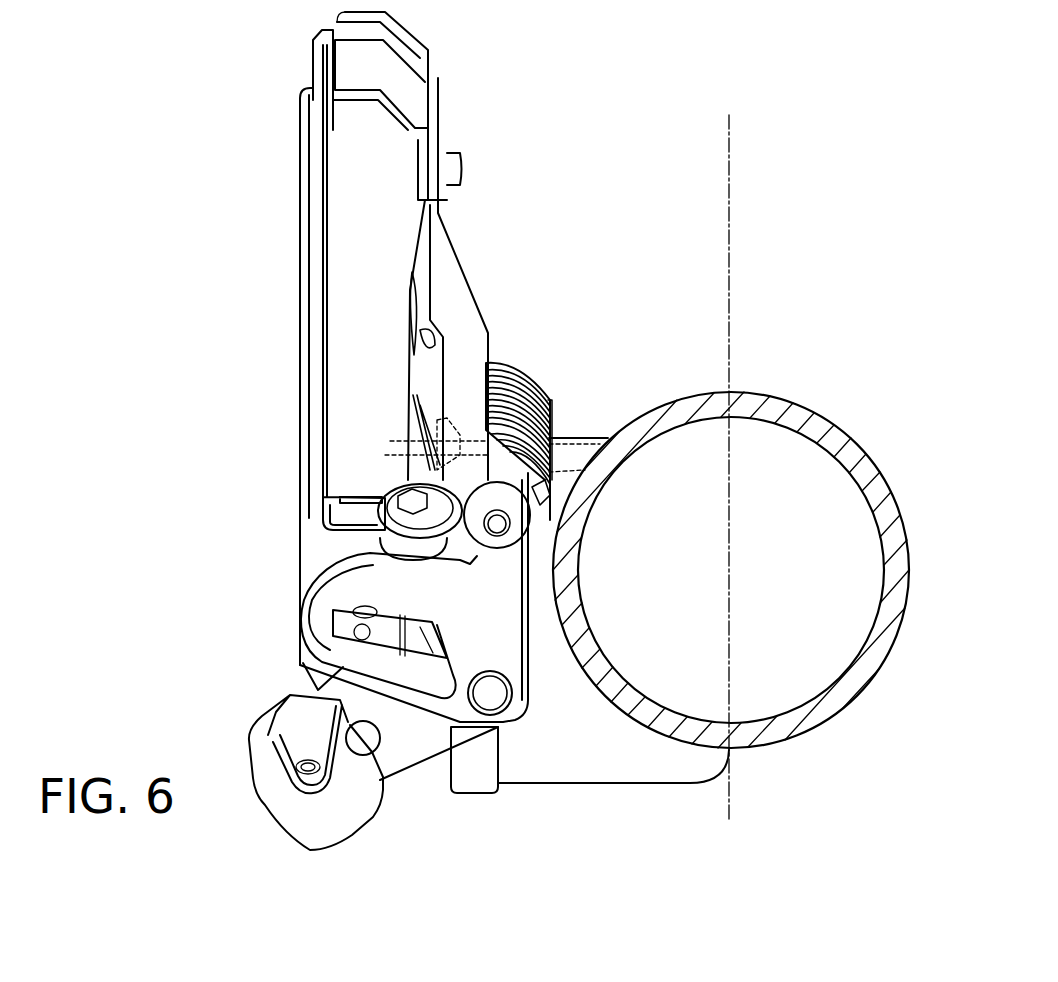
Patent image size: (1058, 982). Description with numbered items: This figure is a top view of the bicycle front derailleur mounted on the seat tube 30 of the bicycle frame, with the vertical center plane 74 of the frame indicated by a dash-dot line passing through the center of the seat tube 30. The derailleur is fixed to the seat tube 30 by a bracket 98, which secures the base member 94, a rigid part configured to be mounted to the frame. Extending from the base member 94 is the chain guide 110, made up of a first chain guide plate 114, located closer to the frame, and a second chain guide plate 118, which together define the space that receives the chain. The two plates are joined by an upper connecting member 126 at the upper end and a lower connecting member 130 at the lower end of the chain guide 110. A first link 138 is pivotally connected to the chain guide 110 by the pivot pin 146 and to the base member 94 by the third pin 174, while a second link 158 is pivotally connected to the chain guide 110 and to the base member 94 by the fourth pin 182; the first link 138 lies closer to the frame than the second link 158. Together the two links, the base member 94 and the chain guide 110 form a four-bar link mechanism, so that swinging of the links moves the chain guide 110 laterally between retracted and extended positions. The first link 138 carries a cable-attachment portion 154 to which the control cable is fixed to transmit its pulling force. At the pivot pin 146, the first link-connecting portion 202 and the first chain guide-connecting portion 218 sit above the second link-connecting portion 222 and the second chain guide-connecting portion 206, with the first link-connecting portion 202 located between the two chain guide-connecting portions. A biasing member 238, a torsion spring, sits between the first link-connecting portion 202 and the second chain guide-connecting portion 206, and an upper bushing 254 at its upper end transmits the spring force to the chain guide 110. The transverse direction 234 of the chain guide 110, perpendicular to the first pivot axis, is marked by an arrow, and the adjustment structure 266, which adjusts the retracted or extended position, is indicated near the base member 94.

The seat tube 30 is at (753, 395).
The vertical center plane 74 is at (728, 188).
The base member 94 is at (263, 727).
The bracket 98 is at (613, 768).
The chain guide 110 is at (300, 200).
The first chain guide plate 114 is at (453, 278).
The second chain guide plate 118 is at (300, 292).
The upper connecting member 126 is at (335, 545).
The lower connecting member 130 is at (430, 62).
The first link 138 is at (517, 687).
The pivot pin 146 is at (492, 678).
The cable-attachment portion 154 is at (447, 548).
The second link 158 is at (315, 683).
The third pin 174 is at (490, 698).
The fourth pin 182 is at (368, 745).
The first link-connecting portion 202 is at (547, 472).
The second chain guide-connecting portion 206 is at (502, 363).
The first chain guide-connecting portion 218 is at (488, 537).
The second link-connecting portion 222 is at (420, 383).
The transverse direction 234 is at (150, 465).
The biasing member 238 is at (535, 385).
The upper bushing 254 is at (547, 492).
The adjustment structure 266 is at (223, 670).